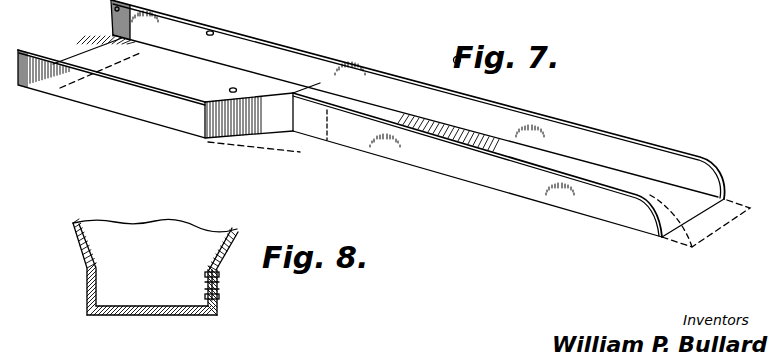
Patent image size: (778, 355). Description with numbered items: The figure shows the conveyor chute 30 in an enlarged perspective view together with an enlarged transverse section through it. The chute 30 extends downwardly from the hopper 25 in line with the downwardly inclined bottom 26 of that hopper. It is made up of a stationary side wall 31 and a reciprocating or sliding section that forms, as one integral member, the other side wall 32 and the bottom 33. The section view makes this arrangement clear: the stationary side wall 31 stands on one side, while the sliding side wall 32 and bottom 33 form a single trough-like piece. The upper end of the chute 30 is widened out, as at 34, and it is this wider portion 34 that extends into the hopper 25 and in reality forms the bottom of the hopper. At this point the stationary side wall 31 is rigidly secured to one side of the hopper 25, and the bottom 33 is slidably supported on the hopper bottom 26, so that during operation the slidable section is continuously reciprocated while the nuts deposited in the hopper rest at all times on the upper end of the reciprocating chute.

In FIG. 8, the hopper 25 is at (213, 240).
In FIG. 8, the downwardly inclined bottom 26 is at (122, 316).
In FIG. 7, the conveyor chute 30 is at (283, 49).
In FIG. 8, the conveyor chute 30 is at (219, 289).
In FIG. 7, the stationary side wall 31 is at (338, 68).
In FIG. 7, the other side wall 32 is at (413, 153).
In FIG. 8, the other side wall 32 is at (98, 280).
In FIG. 7, the bottom 33 is at (565, 163).
In FIG. 8, the bottom 33 is at (155, 301).
In FIG. 7, the widened portion 34 is at (165, 77).